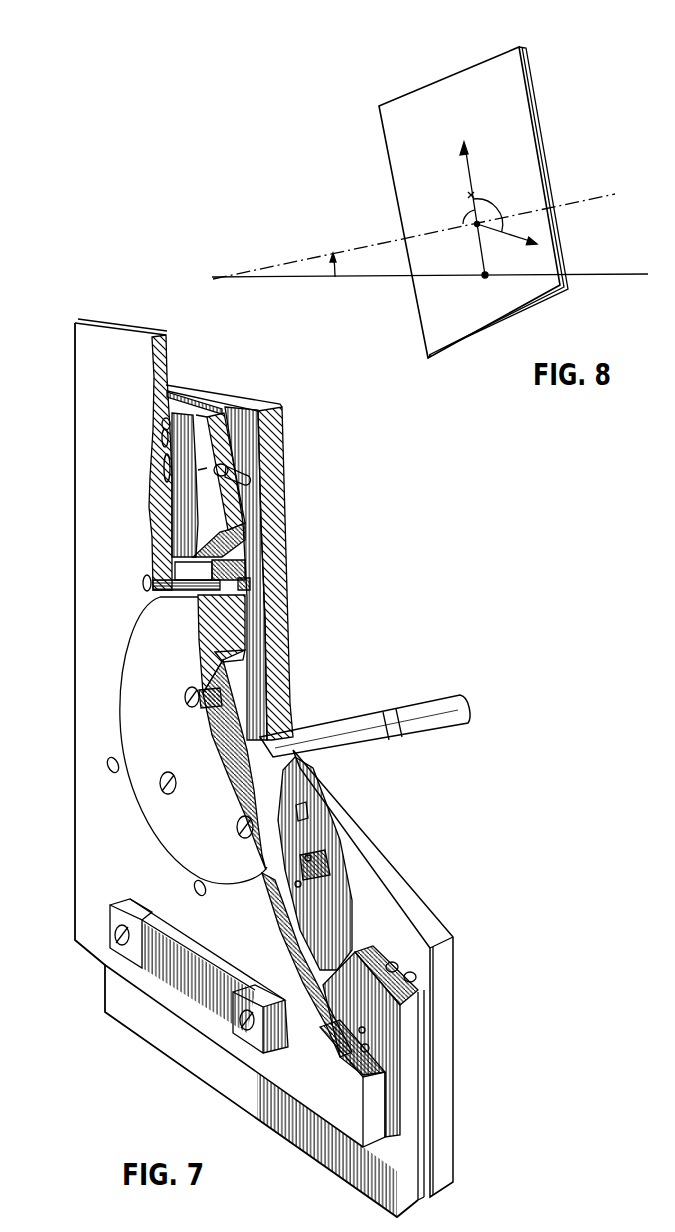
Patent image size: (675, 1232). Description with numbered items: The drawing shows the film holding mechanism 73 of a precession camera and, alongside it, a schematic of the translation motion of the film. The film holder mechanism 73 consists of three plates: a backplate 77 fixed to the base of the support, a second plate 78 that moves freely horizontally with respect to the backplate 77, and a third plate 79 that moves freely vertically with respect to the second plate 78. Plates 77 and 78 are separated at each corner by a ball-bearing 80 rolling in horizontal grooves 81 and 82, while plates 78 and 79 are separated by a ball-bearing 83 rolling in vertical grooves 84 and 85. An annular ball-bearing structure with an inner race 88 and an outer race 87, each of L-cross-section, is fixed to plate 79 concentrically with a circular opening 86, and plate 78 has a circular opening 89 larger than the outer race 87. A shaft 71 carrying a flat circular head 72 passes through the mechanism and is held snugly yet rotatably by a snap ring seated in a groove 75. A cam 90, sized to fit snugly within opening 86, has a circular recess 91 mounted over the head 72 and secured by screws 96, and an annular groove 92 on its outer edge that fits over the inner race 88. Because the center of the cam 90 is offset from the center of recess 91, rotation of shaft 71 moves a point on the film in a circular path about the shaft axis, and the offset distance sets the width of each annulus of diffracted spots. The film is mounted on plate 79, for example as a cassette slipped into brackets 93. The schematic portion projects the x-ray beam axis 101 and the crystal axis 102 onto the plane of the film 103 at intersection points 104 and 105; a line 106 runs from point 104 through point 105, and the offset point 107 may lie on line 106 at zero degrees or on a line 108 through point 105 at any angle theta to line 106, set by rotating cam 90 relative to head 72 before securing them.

In FIG. 7, the shaft 71 is at (327, 730).
In FIG. 7, the flat circular head 72 is at (302, 820).
In FIG. 7, the film holder mechanism 73 is at (232, 386).
In FIG. 7, the groove 75 is at (390, 742).
In FIG. 7, the backplate 77 is at (258, 407).
In FIG. 7, the second plate 78 is at (200, 406).
In FIG. 7, the third plate 79 is at (118, 330).
In FIG. 7, the ball-bearing 80 is at (235, 475).
In FIG. 7, the horizontal groove 81 is at (247, 482).
In FIG. 7, the horizontal groove 82 is at (228, 465).
In FIG. 7, the ball-bearing 83 is at (158, 446).
In FIG. 7, the vertical groove 84 is at (160, 424).
In FIG. 7, the vertical groove 85 is at (160, 478).
In FIG. 7, the circular opening 86 is at (262, 878).
In FIG. 7, the outer race 87 is at (240, 567).
In FIG. 7, the inner race 88 is at (255, 583).
In FIG. 7, the circular opening 89 is at (245, 528).
In FIG. 7, the cam 90 is at (133, 693).
In FIG. 7, the circular recess 91 is at (248, 655).
In FIG. 7, the annular groove 92 is at (237, 612).
In FIG. 7, the brackets 93 is at (245, 1025).
In FIG. 7, the screws 96 is at (240, 847).
In FIG. 8, the x-ray beam axis 101 is at (337, 277).
In FIG. 8, the crystal axis 102 is at (338, 253).
In FIG. 8, the film 103 is at (515, 80).
In FIG. 8, the intersection point 104 is at (485, 278).
In FIG. 8, the intersection point 105 is at (473, 225).
In FIG. 8, the line 106 is at (467, 173).
In FIG. 8, the offset point 107 is at (473, 195).
In FIG. 8, the line 108 is at (505, 235).